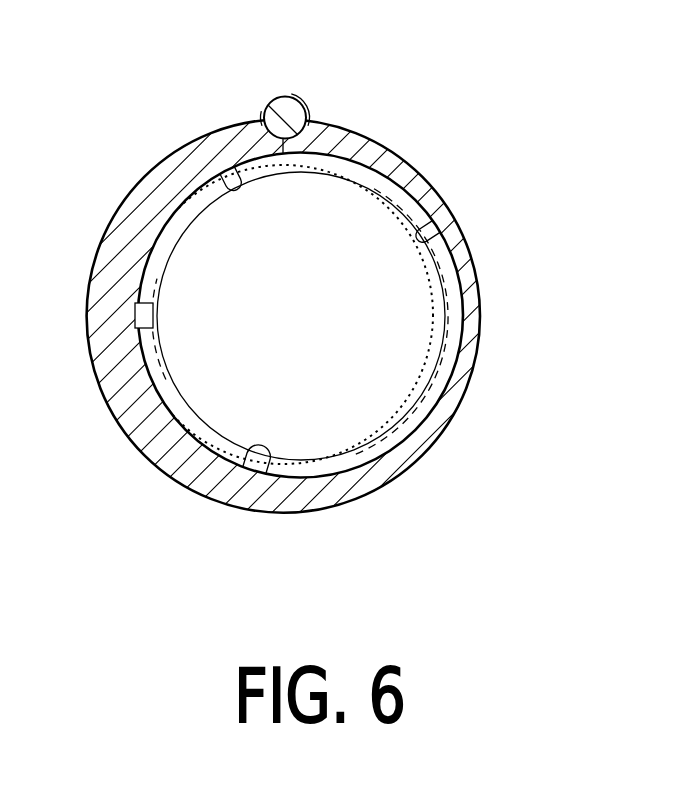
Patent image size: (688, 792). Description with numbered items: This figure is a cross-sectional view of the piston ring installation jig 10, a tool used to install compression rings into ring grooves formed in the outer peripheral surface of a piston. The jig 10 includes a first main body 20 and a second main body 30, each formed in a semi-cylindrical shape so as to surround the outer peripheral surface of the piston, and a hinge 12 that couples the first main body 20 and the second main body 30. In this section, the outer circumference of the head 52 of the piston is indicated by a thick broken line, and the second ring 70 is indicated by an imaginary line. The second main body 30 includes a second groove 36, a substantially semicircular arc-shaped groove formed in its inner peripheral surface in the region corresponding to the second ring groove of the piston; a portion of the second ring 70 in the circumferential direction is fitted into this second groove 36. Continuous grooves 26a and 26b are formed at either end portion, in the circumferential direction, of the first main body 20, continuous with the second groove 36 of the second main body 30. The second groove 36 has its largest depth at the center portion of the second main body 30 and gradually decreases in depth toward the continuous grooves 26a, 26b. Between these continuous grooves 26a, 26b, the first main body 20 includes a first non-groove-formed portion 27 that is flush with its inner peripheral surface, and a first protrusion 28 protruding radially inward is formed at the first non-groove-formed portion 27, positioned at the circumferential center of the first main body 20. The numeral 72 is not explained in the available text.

The piston ring installation jig 10 is at (415, 92).
The hinge 12 is at (287, 97).
The first main body 20 is at (157, 160).
The continuous groove 26a is at (227, 170).
The continuous groove 26b is at (258, 470).
The first non-groove-formed portion 27 is at (139, 279).
The first protrusion 28 is at (153, 317).
The second main body 30 is at (407, 162).
The second groove 36 is at (450, 213).
The head 52 is at (442, 268).
The second ring 70 is at (168, 221).
The dashed line 72 is at (157, 320).